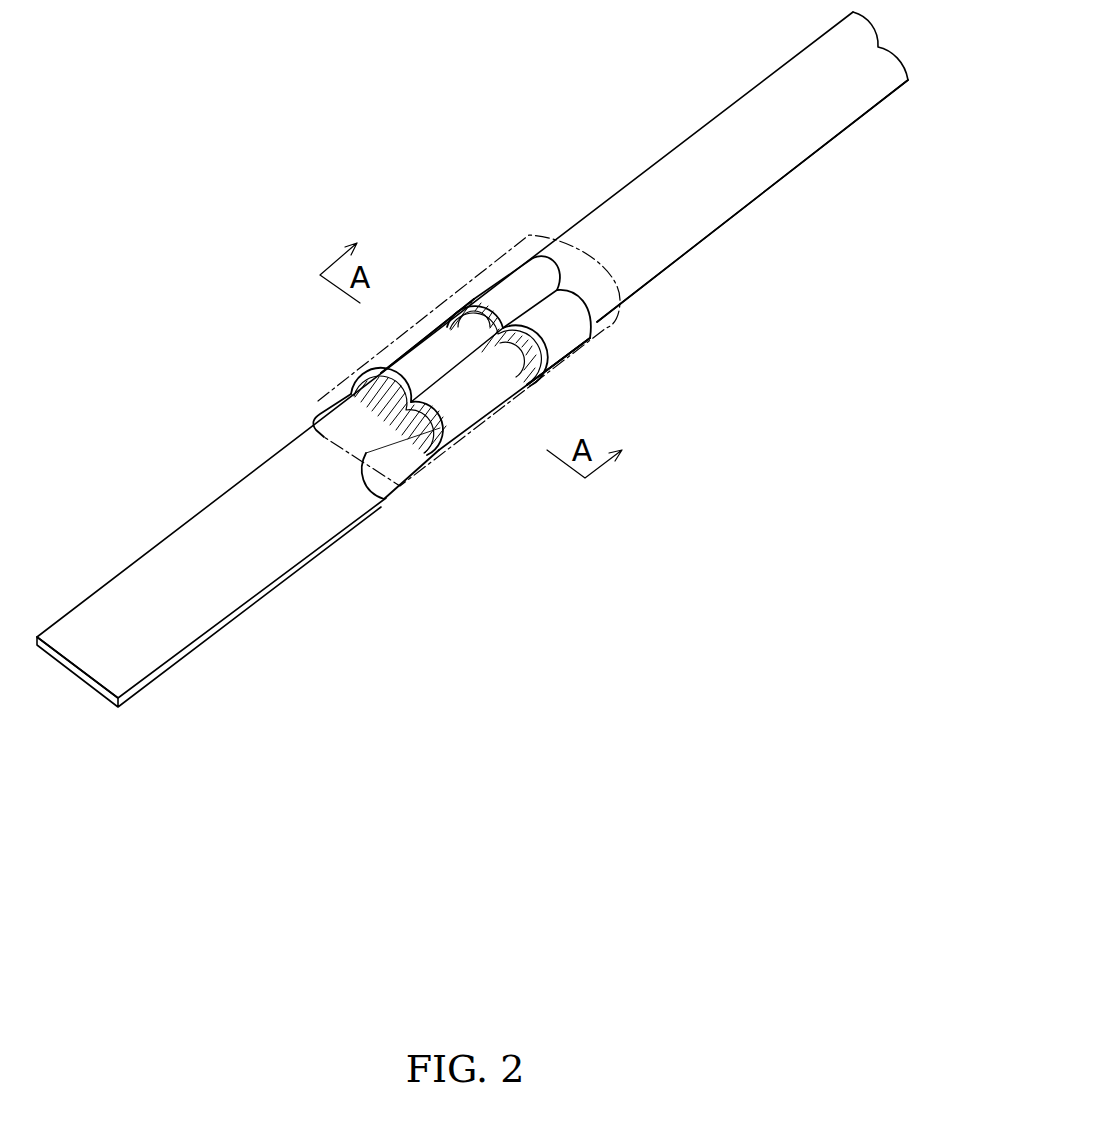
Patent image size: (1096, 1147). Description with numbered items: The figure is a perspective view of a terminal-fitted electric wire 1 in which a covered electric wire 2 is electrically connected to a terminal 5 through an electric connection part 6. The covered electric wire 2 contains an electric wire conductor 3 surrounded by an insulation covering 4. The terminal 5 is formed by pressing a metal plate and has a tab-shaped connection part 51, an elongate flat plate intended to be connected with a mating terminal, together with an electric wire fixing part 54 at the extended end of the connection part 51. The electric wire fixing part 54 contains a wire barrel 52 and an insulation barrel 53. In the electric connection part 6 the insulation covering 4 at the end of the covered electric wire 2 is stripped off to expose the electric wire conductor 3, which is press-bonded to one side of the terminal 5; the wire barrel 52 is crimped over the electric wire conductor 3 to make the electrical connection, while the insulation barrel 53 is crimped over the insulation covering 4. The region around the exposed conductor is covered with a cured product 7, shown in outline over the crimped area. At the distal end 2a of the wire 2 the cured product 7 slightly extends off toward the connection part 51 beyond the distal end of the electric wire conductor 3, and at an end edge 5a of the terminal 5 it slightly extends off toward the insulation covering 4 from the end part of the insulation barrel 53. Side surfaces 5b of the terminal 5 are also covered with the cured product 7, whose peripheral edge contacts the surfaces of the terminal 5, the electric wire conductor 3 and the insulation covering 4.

The terminal-fitted electric wire 1 is at (226, 211).
The covered electric wire 2 is at (716, 100).
The distal end of the wire 2a is at (366, 470).
The electric wire conductor 3 is at (568, 362).
The insulation covering 4 is at (682, 262).
The terminal 5 is at (156, 530).
The end edge of the terminal 5a is at (600, 300).
The side surfaces of the terminal 5b is at (398, 368).
The electric connection part 6 is at (372, 362).
The cured product 7 is at (445, 455).
The connection part 51 is at (205, 620).
The wire barrel 52 is at (383, 345).
The insulation barrel 53 is at (503, 283).
The electric wire fixing part 54 is at (470, 287).